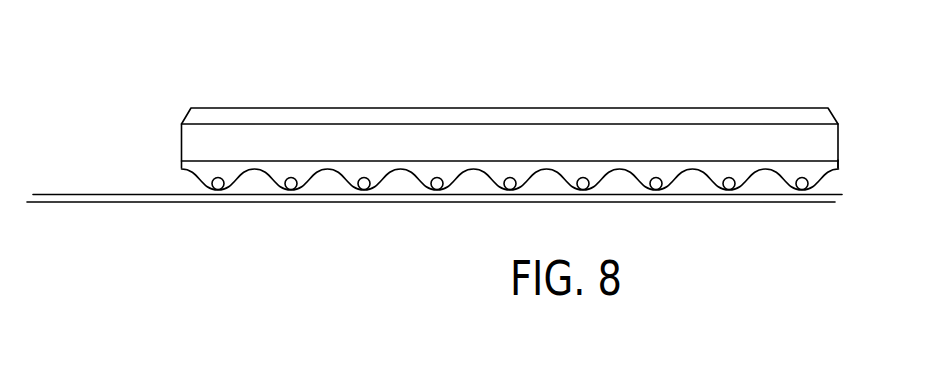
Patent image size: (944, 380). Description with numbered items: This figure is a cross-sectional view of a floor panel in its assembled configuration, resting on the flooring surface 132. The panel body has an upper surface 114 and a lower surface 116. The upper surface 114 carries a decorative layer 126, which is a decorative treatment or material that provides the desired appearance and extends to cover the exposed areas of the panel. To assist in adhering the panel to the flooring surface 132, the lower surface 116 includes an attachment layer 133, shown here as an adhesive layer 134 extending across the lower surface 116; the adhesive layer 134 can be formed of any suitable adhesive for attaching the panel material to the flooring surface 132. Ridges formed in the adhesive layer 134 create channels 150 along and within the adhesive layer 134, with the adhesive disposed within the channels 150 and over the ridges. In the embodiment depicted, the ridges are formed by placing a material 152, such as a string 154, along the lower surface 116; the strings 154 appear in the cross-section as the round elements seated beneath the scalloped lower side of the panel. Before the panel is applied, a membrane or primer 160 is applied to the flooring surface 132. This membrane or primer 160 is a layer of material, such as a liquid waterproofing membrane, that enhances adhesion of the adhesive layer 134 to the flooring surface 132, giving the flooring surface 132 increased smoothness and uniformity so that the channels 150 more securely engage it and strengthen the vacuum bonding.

The upper surface 114 is at (687, 117).
The decorative layer 126 is at (510, 107).
The lower surface 116 is at (218, 160).
The adhesive layer 134 is at (787, 173).
The channels 150 is at (402, 180).
The material 152 is at (582, 200).
The string 154 is at (658, 185).
The attachment layer 133 is at (845, 171).
The membrane or primer 160 is at (117, 194).
The flooring surface 132 is at (65, 203).